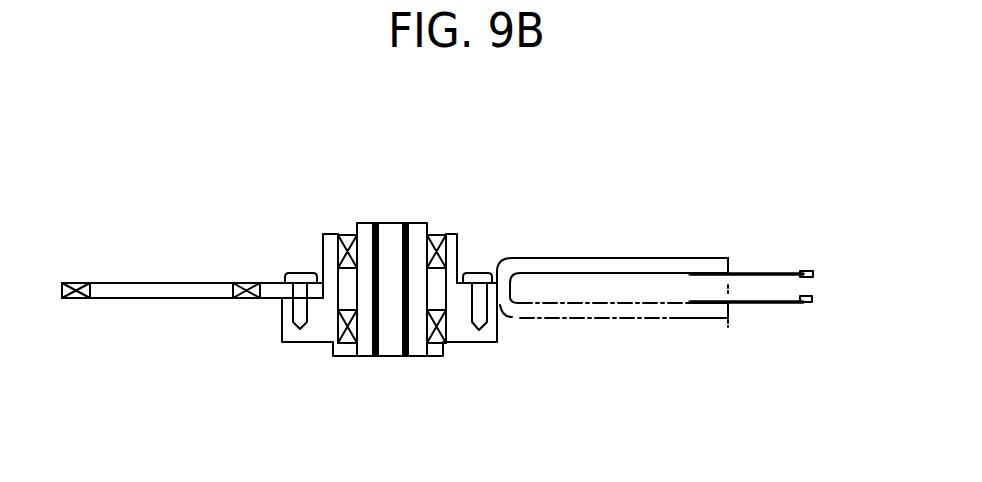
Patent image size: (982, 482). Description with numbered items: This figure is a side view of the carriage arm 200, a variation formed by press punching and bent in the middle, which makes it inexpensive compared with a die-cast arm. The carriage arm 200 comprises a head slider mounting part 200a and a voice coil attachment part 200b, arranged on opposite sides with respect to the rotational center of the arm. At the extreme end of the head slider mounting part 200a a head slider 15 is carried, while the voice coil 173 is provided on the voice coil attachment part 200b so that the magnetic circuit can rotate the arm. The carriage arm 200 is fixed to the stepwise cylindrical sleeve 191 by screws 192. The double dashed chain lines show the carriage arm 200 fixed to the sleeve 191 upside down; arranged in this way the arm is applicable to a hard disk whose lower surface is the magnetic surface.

The head slider 15 is at (813, 274).
The voice coil 173 is at (83, 298).
The stepwise cylindrical sleeve 191 is at (462, 332).
The screws 192 is at (490, 268).
The carriage arm 200 is at (602, 258).
The head slider mounting part 200a is at (678, 258).
The voice coil attachment part 200b is at (198, 283).